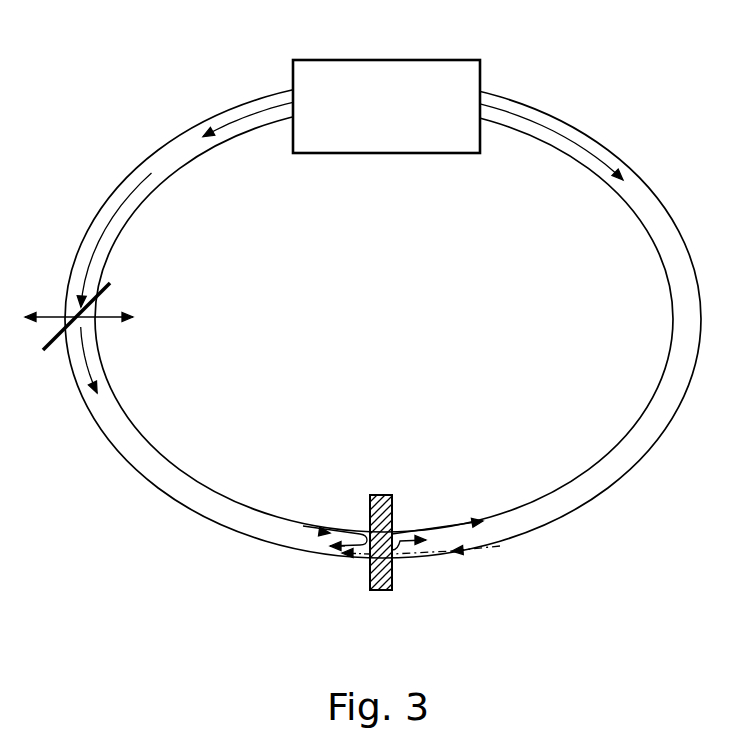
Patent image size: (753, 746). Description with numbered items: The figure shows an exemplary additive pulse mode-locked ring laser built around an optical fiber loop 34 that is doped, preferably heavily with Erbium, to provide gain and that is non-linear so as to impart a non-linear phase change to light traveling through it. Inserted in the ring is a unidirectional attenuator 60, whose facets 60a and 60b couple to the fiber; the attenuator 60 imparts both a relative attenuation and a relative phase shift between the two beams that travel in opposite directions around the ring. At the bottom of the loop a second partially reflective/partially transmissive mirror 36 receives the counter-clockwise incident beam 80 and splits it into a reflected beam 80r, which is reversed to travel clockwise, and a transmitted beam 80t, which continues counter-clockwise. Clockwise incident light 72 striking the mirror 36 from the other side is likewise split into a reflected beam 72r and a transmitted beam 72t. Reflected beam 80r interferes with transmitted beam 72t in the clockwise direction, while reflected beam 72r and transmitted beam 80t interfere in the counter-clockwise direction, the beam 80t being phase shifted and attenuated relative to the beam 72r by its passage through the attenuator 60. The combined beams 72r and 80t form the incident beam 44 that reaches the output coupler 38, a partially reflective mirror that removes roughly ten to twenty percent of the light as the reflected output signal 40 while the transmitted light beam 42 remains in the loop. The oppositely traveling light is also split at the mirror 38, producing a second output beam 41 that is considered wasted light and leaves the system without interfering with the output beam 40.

The optical fiber loop 34 is at (657, 213).
The second partially reflective/partially transmissive mirror 36 is at (378, 495).
The output coupler 38 is at (109, 291).
The output signal 40 is at (50, 311).
The second output beam 41 is at (103, 321).
The transmitted light beam 42 is at (86, 366).
The incident beam 44 is at (93, 256).
The unidirectional attenuator 60 is at (375, 60).
The facet of attenuator 60a is at (291, 79).
The facet of attenuator 60b is at (483, 84).
The incident light 72 is at (574, 142).
The reflected beam 72r is at (398, 546).
The transmitted beam 72t is at (352, 559).
The counter clockwise traveling incident beam 80 is at (232, 123).
The reflected beam 80r is at (337, 554).
The transmitted beam 80t is at (433, 529).